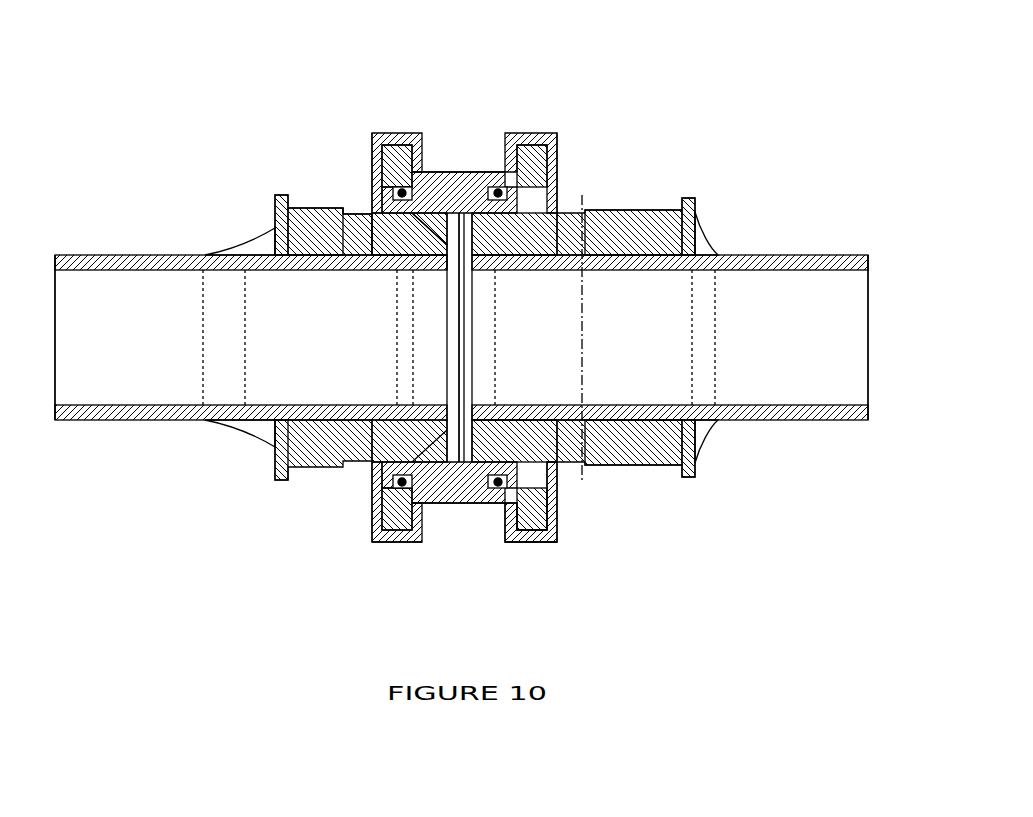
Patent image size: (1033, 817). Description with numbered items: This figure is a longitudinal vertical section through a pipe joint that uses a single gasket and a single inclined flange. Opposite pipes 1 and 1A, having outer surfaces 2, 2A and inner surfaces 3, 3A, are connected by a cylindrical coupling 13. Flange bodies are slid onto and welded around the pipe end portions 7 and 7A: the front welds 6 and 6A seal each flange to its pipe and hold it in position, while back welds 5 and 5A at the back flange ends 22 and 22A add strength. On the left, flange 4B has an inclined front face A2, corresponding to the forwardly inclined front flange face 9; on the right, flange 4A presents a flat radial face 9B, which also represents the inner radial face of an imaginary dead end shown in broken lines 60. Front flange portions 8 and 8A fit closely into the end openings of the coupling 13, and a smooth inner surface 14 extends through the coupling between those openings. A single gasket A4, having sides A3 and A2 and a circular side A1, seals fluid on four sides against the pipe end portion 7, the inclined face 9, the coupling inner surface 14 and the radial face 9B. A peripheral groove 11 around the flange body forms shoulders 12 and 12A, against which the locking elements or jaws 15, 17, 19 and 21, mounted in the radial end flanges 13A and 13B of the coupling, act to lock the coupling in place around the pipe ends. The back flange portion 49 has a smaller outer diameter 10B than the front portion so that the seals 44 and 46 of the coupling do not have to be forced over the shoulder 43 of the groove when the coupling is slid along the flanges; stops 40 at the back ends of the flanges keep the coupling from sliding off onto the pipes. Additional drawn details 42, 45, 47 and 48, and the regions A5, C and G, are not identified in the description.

The pipe 1 is at (70, 418).
The pipe 1A is at (770, 413).
The outer surface 2 is at (73, 252).
The outer surface 2A is at (838, 256).
The inner surface 3 is at (82, 270).
The inner surface 3A is at (835, 272).
The cylindrical flange body 4A is at (647, 470).
The flange 4B is at (263, 447).
The back weld 5 is at (240, 247).
The back weld 5A is at (700, 240).
The front welding 6 is at (400, 262).
The front welding 6A is at (487, 400).
The end portion of pipe 7 is at (445, 268).
The end portion of pipe 7A is at (520, 405).
The front flange portion 8 is at (432, 173).
The front flange portion 8A is at (560, 160).
The front flange face 9 is at (315, 467).
The flat radial face 9B is at (528, 275).
The outer diameter of back flange portion 10B is at (300, 205).
The peripheral groove 11 is at (327, 207).
The shoulder 12 is at (330, 242).
The shoulder 12A is at (542, 273).
The cylindrical coupling 13 is at (472, 177).
The radial end flange 13A is at (387, 130).
The radial end flange 13B is at (500, 540).
The inner surface 14 is at (452, 172).
The locking element 15 is at (355, 215).
The locking element 17 is at (373, 542).
The locking element 19 is at (552, 133).
The locking element 21 is at (552, 525).
The back flange end 22 is at (247, 227).
The back flange end 22A is at (697, 212).
The stop 40 is at (277, 480).
The clamp outer wall 42 is at (368, 517).
The shoulder of groove 43 is at (342, 467).
The seal 44 is at (383, 543).
The lower flange tab 45 is at (430, 507).
The seal 46 is at (490, 508).
The lower second flange tab 47 is at (480, 507).
The gap plate 48 is at (473, 360).
The back flange portion 49 is at (367, 173).
The imaginary dead end 60 is at (625, 337).
The circular side of gasket A1 is at (416, 192).
The inclined surface A2 is at (345, 232).
The gasket side A3 is at (455, 272).
The single gasket A4 is at (452, 507).
The fifth angle region A5 is at (608, 470).
The center line C is at (407, 337).
The gap G is at (456, 340).